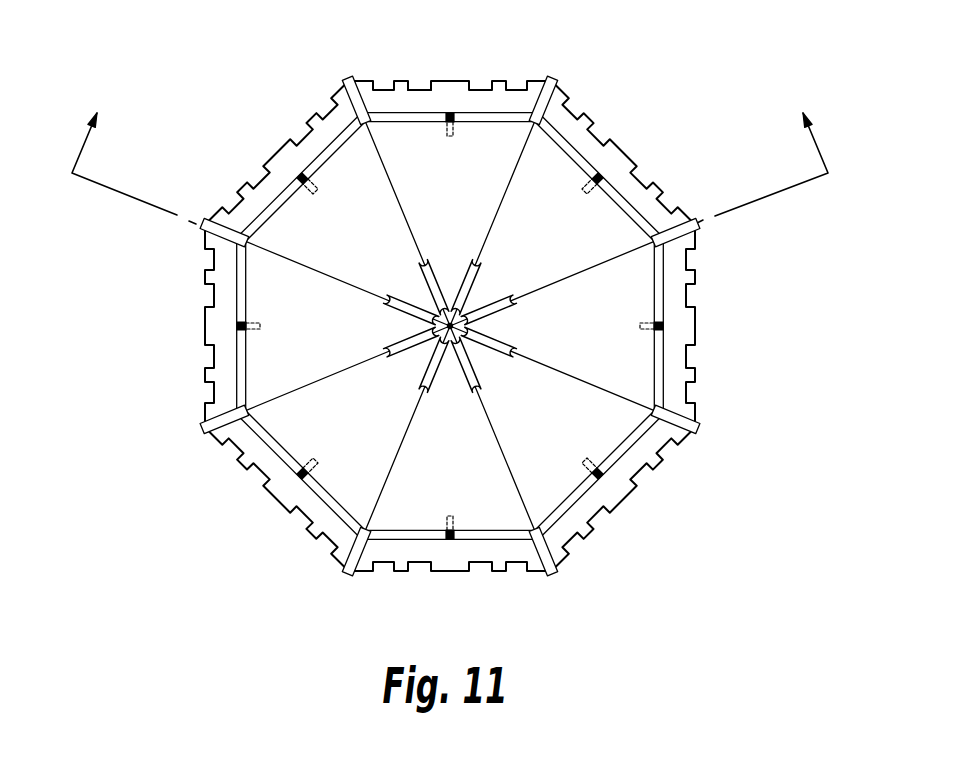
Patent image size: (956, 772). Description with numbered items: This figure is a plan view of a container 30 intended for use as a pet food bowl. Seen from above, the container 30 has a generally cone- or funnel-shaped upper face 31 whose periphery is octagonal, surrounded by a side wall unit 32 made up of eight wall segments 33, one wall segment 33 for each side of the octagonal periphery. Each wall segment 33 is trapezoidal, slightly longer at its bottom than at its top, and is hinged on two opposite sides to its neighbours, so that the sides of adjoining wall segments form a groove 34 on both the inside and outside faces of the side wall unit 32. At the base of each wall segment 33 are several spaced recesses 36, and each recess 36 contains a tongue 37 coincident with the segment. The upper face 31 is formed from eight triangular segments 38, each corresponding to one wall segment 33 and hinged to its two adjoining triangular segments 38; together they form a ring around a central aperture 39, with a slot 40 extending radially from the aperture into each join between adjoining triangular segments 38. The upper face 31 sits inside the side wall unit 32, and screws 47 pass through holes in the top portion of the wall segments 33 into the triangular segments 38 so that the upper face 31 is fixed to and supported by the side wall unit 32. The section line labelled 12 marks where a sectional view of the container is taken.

The section line 12- 12 is at (446, 168).
The container 30 is at (747, 273).
The upper face 31 is at (622, 347).
The side wall unit 32 is at (215, 303).
The wall segment 33 is at (282, 162).
The groove 34 is at (204, 430).
The recess 36 is at (418, 88).
The tongue 37 is at (405, 85).
The triangular segment 38 is at (595, 232).
The central aperture 39 is at (450, 343).
The slot 40 is at (407, 344).
The screw 47 is at (293, 487).